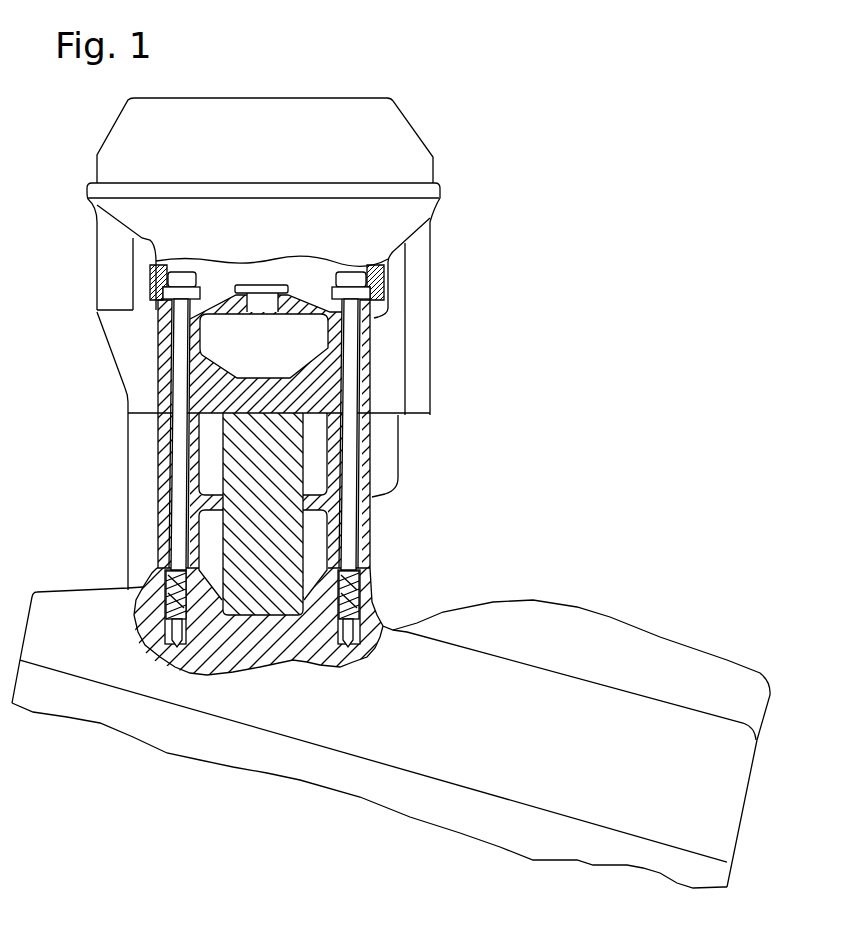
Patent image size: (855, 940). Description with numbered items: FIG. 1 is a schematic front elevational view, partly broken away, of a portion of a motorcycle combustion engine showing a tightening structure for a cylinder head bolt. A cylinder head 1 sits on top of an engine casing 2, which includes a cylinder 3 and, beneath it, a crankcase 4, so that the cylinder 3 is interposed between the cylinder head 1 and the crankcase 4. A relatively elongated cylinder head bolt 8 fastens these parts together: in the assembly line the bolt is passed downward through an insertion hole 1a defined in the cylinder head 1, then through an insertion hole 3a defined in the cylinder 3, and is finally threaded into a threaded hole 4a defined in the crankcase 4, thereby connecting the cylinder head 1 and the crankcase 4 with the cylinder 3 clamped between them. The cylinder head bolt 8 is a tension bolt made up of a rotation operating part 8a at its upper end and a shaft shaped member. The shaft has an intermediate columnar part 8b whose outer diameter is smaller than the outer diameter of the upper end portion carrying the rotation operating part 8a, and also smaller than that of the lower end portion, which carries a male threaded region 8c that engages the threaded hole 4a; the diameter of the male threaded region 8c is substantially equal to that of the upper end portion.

The cylinder head 1 is at (430, 338).
The insertion hole 1a is at (167, 377).
The engine casing 2 is at (490, 497).
The cylinder 3 is at (370, 500).
The insertion hole 3a is at (167, 532).
The crankcase 4 is at (372, 602).
The threaded hole 4a is at (175, 647).
The cylinder head bolt 8 is at (258, 561).
The rotation operating part 8a is at (148, 278).
The intermediate columnar part 8b is at (171, 493).
The male threaded region 8c is at (163, 600).